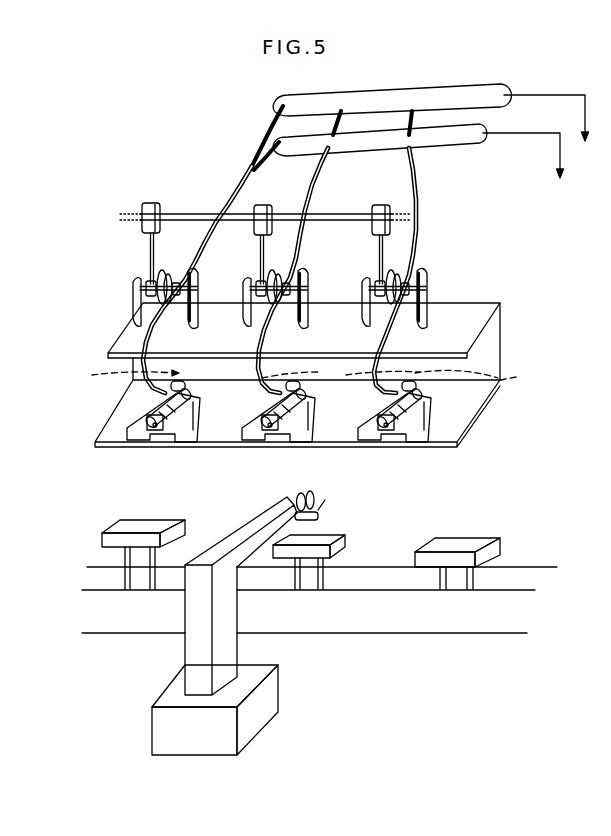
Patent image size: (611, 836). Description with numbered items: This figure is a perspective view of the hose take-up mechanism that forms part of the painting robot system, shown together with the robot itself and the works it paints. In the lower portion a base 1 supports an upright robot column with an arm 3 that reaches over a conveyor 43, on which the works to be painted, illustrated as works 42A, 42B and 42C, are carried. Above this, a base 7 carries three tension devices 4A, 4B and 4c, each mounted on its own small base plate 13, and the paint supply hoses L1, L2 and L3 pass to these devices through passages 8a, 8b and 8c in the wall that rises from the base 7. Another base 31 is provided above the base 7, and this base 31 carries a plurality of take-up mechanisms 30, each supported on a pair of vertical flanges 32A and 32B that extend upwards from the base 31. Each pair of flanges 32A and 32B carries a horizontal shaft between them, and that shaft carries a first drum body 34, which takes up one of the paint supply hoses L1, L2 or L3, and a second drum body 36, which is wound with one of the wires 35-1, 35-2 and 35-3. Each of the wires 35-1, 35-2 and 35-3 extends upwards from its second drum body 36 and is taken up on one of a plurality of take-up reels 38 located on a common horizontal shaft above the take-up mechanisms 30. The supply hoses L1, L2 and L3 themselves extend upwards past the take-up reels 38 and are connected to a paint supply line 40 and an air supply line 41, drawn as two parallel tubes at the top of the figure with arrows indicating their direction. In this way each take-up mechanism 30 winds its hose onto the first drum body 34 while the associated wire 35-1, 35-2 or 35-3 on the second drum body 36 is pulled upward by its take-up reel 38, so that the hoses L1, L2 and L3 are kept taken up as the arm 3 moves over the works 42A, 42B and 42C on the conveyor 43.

The base 1 is at (265, 718).
The robot arm 3 is at (240, 563).
The tension device 4A is at (410, 442).
The tension device 4B is at (302, 443).
The tension device 4c is at (148, 403).
The base 7 is at (458, 419).
The wire passage 8a is at (478, 373).
The wire passage 8b is at (341, 373).
The wire passage 8c is at (122, 375).
The base plate of tension device 13 is at (135, 440).
The take-up mechanism 30 is at (122, 277).
The base 31 is at (486, 306).
The vertical flange 32A is at (201, 313).
The vertical flange 32B is at (130, 303).
The first drum body 34 is at (172, 306).
The wire 35-1 is at (384, 259).
The wire 35-2 is at (262, 259).
The wire 35-3 is at (151, 257).
The second drum body 36 is at (153, 298).
The take-up reel 38 is at (150, 203).
The paint supply line 40 is at (452, 143).
The air supply line 41 is at (500, 105).
The work 42A is at (482, 541).
The work 42B is at (340, 538).
The work 42C is at (162, 527).
The conveyor 43 is at (410, 622).
The paint supply hose L1 is at (418, 230).
The paint supply hose L2 is at (318, 186).
The paint supply hose L3 is at (232, 192).